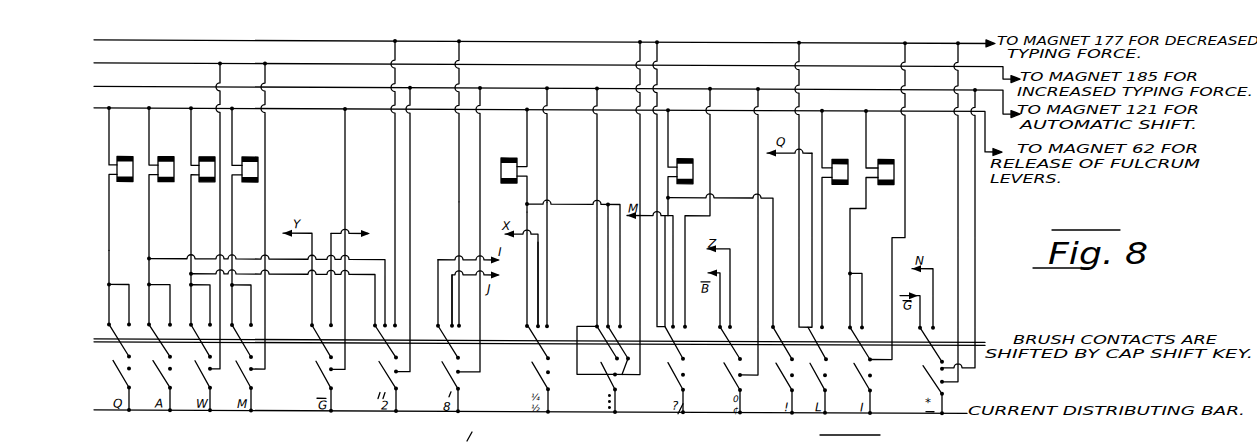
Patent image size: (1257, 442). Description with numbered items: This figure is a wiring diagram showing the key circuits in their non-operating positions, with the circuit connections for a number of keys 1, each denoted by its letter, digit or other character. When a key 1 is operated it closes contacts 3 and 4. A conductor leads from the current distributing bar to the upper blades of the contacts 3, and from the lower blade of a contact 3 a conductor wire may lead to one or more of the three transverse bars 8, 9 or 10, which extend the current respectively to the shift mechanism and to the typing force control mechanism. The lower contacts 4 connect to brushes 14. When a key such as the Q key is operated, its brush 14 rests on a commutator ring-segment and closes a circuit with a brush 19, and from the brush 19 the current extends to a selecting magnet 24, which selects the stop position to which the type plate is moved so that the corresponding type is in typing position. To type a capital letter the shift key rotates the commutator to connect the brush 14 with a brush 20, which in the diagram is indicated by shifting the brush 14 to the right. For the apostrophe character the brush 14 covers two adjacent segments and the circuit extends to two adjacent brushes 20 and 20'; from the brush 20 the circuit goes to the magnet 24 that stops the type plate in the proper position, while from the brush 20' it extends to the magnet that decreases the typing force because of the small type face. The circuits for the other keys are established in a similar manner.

The key 1 is at (552, 255).
The contact 3 is at (133, 370).
The contact 4 is at (131, 355).
The transverse bar 8 is at (842, 86).
The transverse bar 9 is at (861, 62).
The transverse bar 10 is at (769, 40).
The brush 14 is at (118, 352).
The brush 19 is at (108, 324).
The brush 20 is at (342, 283).
The brush 20' is at (519, 266).
The selecting magnet 24 is at (132, 153).